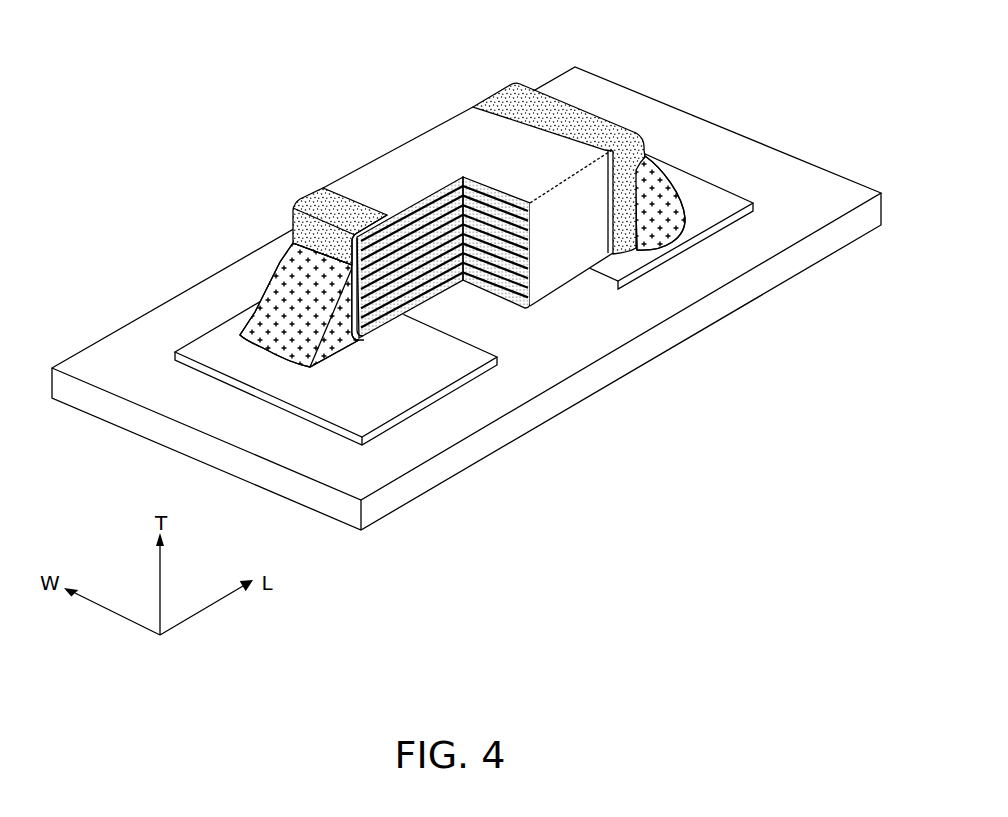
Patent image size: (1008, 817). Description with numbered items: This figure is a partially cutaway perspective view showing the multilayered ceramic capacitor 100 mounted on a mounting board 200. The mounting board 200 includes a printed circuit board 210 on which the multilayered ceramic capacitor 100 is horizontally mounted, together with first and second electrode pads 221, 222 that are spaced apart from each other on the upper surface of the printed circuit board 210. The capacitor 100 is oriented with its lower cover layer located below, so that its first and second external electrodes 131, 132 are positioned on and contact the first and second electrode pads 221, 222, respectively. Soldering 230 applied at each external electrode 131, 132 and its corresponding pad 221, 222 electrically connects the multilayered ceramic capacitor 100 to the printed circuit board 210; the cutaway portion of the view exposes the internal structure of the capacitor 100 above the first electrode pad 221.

The multilayered ceramic capacitor 100 is at (433, 183).
The first external electrode 131 is at (323, 205).
The second external electrode 132 is at (477, 100).
The mounting board 200 is at (466, 297).
The printed circuit board 210 is at (620, 366).
The first electrode pad 221 is at (413, 380).
The second electrode pad 222 is at (698, 198).
The soldering 230 is at (280, 287).